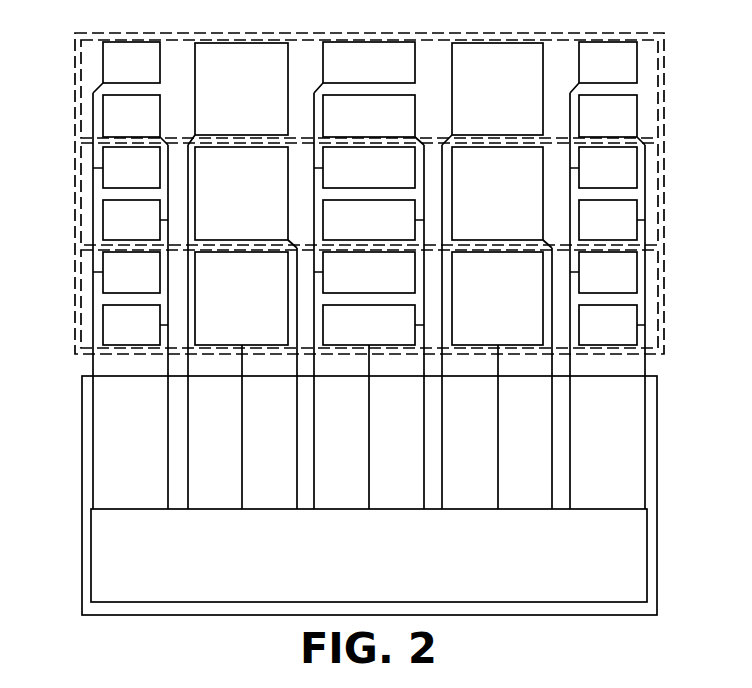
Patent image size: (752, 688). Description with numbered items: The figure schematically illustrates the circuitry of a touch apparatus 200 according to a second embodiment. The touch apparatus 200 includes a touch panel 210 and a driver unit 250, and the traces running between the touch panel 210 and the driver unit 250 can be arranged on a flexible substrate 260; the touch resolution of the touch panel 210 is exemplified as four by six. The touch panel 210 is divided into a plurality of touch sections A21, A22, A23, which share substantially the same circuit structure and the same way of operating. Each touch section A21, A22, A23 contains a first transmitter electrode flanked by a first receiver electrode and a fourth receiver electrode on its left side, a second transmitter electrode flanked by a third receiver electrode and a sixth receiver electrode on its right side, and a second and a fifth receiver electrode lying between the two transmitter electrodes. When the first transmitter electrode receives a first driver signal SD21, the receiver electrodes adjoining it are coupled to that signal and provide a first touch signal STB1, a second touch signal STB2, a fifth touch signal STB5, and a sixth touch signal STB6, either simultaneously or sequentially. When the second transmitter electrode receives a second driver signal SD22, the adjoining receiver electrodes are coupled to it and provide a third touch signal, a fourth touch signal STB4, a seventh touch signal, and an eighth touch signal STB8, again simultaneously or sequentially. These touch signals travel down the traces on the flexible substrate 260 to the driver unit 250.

The touch apparatus 200 is at (722, 627).
The touch panel 210 is at (339, 190).
The driver unit 250 is at (658, 584).
The flexible substrate 260 is at (659, 508).
The touch section A21 is at (75, 91).
The touch section A22 is at (75, 199).
The touch section A23 is at (76, 303).
The first driver signal SD21 is at (186, 138).
The second driver signal SD22 is at (443, 138).
The first touch signal STB1 is at (106, 413).
The second touch signal STB2 is at (327, 397).
The fourth touch signal STB4 is at (587, 445).
The fifth touch signal STB5 is at (161, 445).
The sixth touch signal STB6 is at (417, 452).
The eighth touch signal STB8 is at (641, 413).